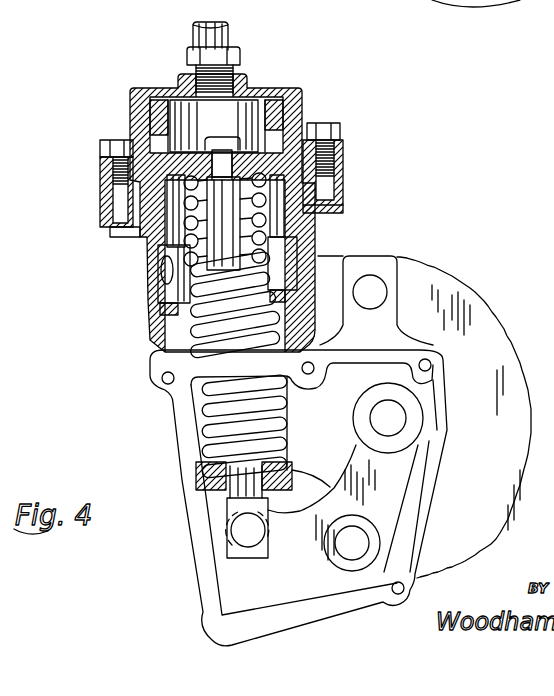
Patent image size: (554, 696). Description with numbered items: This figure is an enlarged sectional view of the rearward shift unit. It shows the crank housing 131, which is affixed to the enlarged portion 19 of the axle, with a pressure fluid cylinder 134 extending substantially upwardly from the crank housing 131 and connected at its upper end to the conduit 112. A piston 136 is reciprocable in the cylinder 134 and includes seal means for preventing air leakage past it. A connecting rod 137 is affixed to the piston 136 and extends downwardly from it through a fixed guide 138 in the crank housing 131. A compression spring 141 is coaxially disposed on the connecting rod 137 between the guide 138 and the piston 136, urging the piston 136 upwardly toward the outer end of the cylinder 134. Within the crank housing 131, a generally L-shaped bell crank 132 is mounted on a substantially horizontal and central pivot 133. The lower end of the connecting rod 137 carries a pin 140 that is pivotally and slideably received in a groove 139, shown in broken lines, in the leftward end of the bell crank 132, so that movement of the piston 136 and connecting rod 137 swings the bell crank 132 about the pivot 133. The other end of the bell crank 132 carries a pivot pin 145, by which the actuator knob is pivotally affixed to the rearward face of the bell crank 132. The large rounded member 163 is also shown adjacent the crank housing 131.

The enlarged portion 19 is at (517, 2).
The conduit 112 is at (230, 42).
The crank housing 131 is at (322, 613).
The bell crank 132 is at (348, 506).
The pivot 133 is at (353, 553).
The pressure fluid cylinder 134 is at (152, 253).
The piston 136 is at (302, 118).
The connecting rod 137 is at (243, 494).
The fixed guide 138 is at (213, 487).
The groove 139 is at (244, 560).
The pin 140 is at (245, 536).
The compression spring 141 is at (283, 430).
The pivot pin 145 is at (397, 420).
The rotor 163 is at (553, 256).